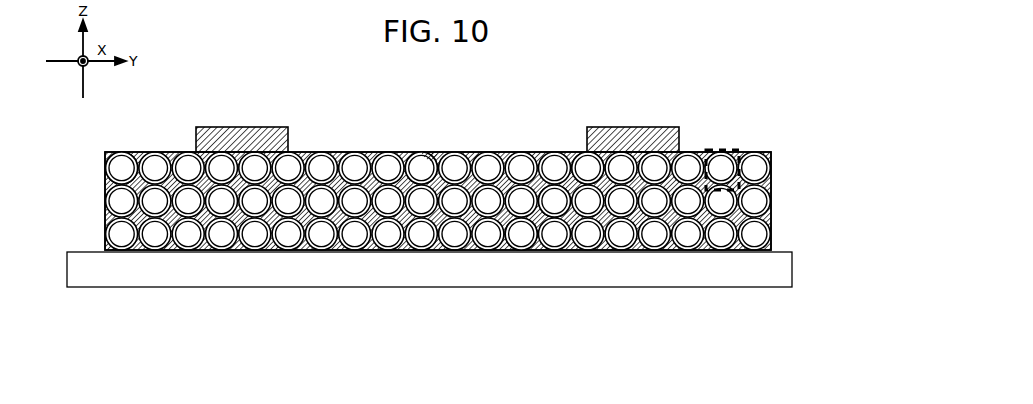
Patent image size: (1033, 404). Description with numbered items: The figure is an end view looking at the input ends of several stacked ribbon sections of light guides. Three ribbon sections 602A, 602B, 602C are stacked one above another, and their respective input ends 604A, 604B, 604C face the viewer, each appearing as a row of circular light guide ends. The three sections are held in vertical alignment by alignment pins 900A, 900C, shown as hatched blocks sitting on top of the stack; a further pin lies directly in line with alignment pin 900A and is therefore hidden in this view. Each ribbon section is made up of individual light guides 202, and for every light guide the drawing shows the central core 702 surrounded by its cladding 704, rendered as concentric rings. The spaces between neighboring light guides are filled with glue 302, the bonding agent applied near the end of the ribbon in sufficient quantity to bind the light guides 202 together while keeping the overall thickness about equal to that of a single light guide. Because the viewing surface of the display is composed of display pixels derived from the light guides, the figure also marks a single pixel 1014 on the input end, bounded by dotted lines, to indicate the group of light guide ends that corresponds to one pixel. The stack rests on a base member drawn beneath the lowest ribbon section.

The light guide 202 is at (121, 167).
The glue 302 is at (105, 215).
The ribbon section 602A is at (780, 232).
The ribbon section 602B is at (780, 198).
The ribbon section 602C is at (780, 166).
The input end 604A is at (520, 234).
The input end 604B is at (554, 201).
The input end 604C is at (588, 168).
The core 702 is at (418, 162).
The cladding 704 is at (431, 160).
The alignment pin 900A is at (238, 127).
The alignment pin 900C is at (629, 127).
The pixel 1014 is at (722, 150).